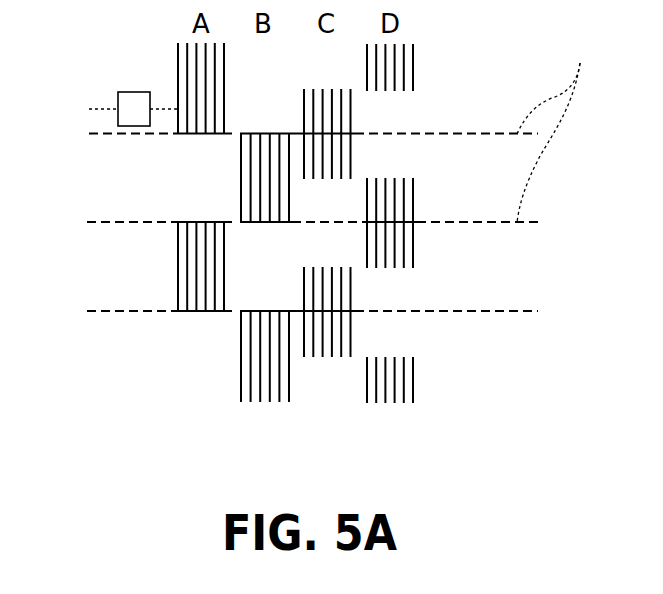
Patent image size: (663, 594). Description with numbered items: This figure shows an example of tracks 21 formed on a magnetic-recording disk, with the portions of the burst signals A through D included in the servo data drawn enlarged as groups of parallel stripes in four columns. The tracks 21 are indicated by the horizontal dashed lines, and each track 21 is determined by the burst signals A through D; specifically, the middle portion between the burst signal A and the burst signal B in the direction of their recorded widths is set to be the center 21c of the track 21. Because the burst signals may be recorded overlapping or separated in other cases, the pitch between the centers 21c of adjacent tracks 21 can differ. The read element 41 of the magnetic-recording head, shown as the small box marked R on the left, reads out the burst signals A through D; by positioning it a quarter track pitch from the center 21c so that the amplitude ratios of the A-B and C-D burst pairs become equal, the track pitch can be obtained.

The track 21 is at (96, 300).
The read element 41 is at (132, 92).
The center of the track 21c is at (558, 129).